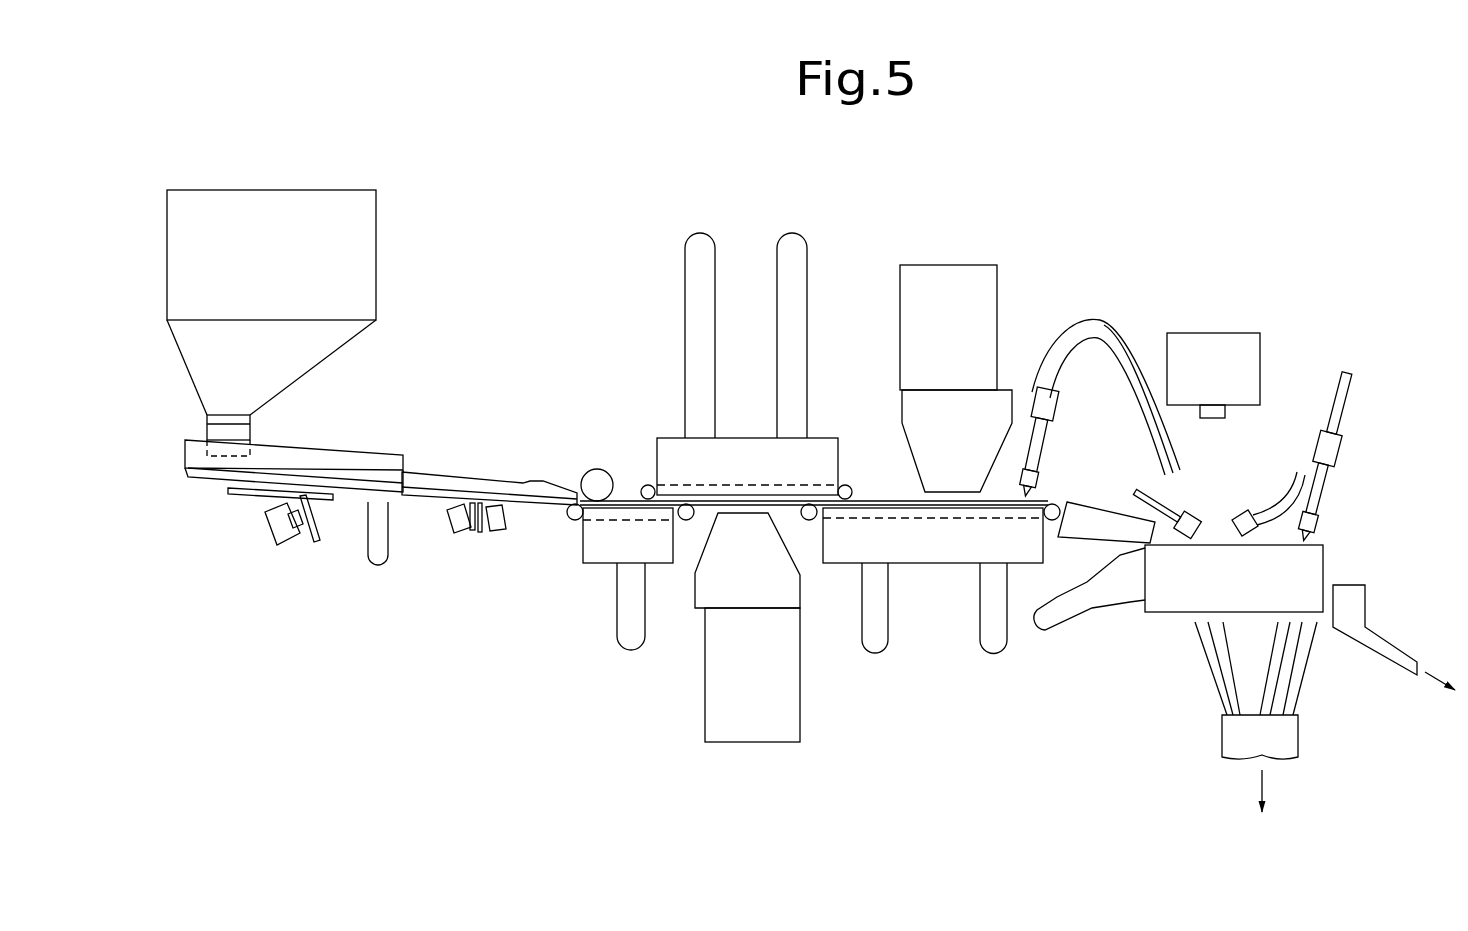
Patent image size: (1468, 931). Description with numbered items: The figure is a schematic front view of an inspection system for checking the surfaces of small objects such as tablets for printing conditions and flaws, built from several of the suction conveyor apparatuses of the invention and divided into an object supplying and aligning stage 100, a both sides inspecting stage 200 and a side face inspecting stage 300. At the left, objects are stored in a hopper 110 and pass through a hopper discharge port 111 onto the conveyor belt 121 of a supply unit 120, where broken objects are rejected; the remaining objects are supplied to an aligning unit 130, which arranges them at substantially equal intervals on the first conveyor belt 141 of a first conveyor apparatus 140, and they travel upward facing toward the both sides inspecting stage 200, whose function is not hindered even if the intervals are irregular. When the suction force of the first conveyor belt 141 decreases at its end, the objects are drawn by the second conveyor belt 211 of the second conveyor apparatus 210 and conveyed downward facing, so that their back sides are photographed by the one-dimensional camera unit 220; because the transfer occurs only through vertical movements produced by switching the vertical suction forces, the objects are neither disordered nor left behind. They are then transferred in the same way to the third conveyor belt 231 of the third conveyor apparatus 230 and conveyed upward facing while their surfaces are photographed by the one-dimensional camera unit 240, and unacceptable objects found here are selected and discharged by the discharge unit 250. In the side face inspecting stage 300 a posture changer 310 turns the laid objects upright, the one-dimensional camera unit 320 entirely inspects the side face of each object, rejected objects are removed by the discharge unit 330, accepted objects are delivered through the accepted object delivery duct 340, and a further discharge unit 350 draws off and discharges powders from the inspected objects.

The object supplying and aligning stage 100 is at (564, 315).
The hopper 110 is at (345, 188).
The hopper discharge port 111 is at (207, 428).
The supply unit 120 is at (226, 504).
The conveyor belt 121 is at (353, 450).
The aligning unit 130 is at (452, 463).
The first conveyor apparatus 140 is at (626, 476).
The first conveyor belt 141 is at (607, 520).
The both sides inspecting stage 200 is at (768, 213).
The second conveyor apparatus 210 is at (830, 430).
The second conveyor belt 211 is at (733, 485).
The one-dimensional camera unit 220 is at (690, 603).
The third conveyor apparatus 230 is at (897, 647).
The third conveyor belt 231 is at (947, 522).
The one-dimensional camera unit 240 is at (970, 265).
The discharge unit 250 is at (1108, 322).
The side face inspecting stage 300 is at (1330, 265).
The posture changer 310 is at (1118, 503).
The one-dimensional camera unit 320 is at (1207, 332).
The discharge unit 330 is at (1347, 405).
The accepted object delivery duct 340 is at (1368, 615).
The discharge unit 350 is at (1300, 738).